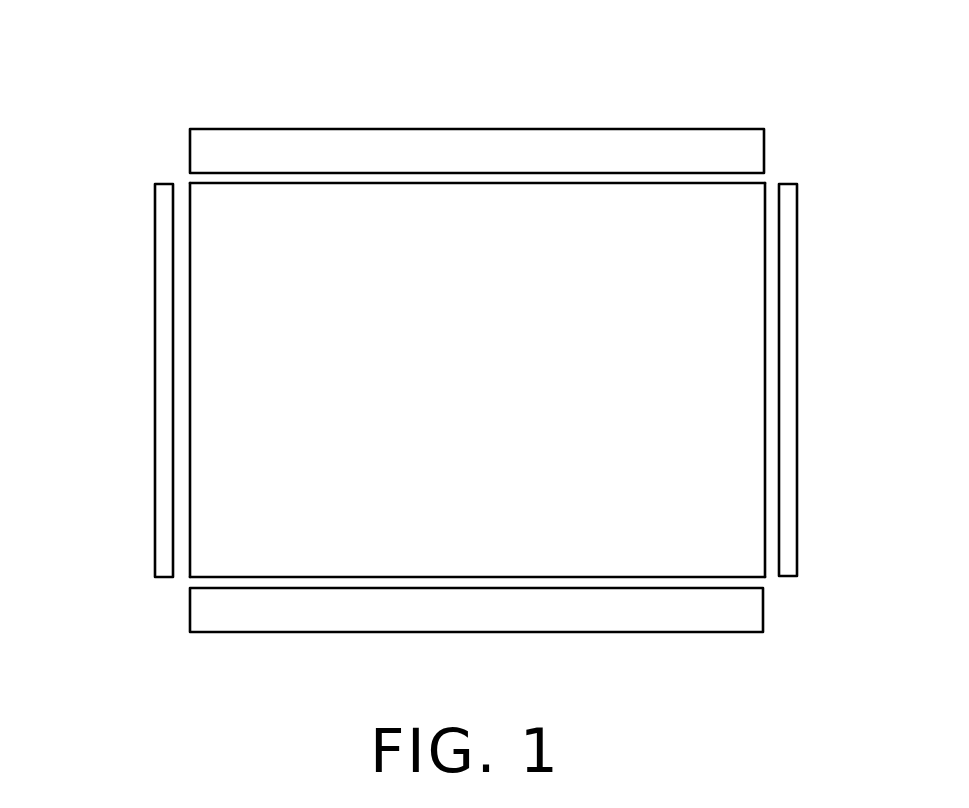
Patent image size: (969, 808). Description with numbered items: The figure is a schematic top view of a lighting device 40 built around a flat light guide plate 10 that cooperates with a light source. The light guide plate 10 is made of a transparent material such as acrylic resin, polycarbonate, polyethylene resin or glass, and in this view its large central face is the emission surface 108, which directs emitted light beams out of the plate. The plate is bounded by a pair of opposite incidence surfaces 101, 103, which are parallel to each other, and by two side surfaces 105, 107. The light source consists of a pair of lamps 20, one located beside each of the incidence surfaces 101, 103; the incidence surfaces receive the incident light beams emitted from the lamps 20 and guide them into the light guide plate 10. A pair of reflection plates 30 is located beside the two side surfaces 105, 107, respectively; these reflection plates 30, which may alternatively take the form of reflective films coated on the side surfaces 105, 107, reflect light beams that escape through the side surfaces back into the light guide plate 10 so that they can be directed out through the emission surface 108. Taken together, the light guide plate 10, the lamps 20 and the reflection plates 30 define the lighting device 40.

The lighting device 40 is at (675, 91).
The light guide plate 10 is at (471, 344).
The incidence surface 101 is at (190, 183).
The incidence surface 103 is at (190, 579).
The side surface 105 is at (190, 357).
The side surface 107 is at (767, 270).
The emission surface 108 is at (365, 208).
The lamp 20 is at (550, 150).
The reflection plate 30 is at (162, 485).